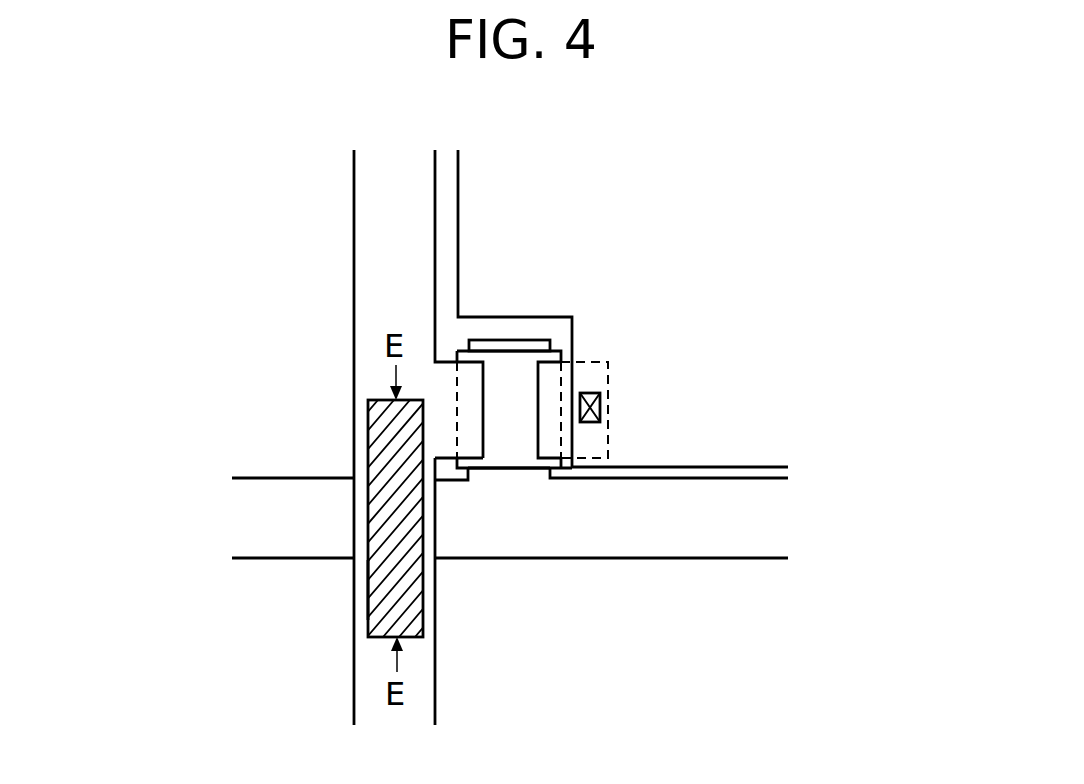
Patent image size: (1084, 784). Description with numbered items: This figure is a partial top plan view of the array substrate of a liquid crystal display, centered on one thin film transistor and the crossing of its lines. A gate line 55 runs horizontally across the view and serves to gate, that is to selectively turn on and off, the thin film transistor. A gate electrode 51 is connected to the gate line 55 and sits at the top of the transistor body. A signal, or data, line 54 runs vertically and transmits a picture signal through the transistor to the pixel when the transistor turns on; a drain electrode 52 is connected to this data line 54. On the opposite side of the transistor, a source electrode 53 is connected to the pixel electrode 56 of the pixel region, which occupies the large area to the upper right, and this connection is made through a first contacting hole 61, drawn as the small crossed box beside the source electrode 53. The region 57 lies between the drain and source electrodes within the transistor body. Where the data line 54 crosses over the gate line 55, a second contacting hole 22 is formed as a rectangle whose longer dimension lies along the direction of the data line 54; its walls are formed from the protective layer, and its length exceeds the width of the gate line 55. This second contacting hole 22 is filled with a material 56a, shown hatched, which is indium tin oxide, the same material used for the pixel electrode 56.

The second contacting hole 22 is at (369, 586).
The gate electrode 51 is at (520, 345).
The drain electrode 52 is at (445, 375).
The source electrode 53 is at (545, 405).
The signal line 54 is at (370, 237).
The gate line 55 is at (578, 540).
The pixel electrode 56 is at (762, 340).
The material 56a is at (383, 462).
The channel region 57 is at (512, 443).
The first contacting hole 61 is at (600, 413).